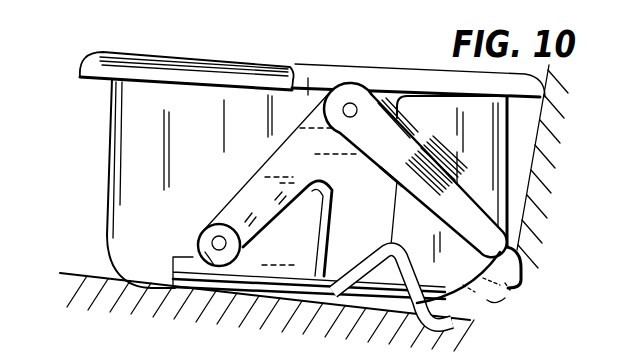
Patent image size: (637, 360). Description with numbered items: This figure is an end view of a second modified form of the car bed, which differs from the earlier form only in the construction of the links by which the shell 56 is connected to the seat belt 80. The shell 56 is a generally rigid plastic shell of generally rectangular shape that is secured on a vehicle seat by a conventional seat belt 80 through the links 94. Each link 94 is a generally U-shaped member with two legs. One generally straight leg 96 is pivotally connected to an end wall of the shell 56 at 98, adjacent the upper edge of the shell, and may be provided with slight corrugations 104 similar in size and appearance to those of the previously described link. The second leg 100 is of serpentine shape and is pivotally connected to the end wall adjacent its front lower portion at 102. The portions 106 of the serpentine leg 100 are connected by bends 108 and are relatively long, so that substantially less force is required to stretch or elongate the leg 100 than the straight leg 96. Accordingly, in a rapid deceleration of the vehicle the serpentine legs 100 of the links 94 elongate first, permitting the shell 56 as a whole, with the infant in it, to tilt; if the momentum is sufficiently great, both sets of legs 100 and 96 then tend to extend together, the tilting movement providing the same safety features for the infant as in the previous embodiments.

The shell 56 is at (348, 66).
The seat belt 80 is at (505, 300).
The link 94 is at (415, 132).
The straight leg 96 is at (399, 187).
The pivotal connection 98 is at (357, 108).
The serpentine leg 100 is at (252, 205).
The pivotal connection 102 is at (214, 240).
The corrugations 104 is at (452, 178).
The portions 106 is at (325, 232).
The bends 108 is at (330, 180).